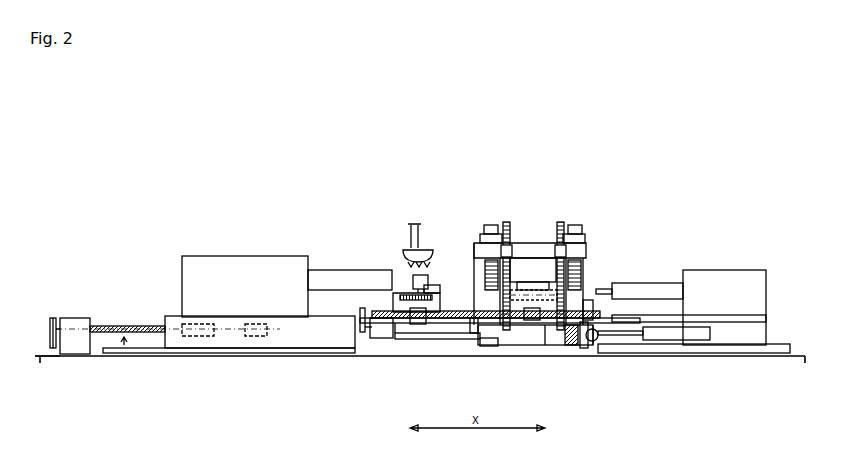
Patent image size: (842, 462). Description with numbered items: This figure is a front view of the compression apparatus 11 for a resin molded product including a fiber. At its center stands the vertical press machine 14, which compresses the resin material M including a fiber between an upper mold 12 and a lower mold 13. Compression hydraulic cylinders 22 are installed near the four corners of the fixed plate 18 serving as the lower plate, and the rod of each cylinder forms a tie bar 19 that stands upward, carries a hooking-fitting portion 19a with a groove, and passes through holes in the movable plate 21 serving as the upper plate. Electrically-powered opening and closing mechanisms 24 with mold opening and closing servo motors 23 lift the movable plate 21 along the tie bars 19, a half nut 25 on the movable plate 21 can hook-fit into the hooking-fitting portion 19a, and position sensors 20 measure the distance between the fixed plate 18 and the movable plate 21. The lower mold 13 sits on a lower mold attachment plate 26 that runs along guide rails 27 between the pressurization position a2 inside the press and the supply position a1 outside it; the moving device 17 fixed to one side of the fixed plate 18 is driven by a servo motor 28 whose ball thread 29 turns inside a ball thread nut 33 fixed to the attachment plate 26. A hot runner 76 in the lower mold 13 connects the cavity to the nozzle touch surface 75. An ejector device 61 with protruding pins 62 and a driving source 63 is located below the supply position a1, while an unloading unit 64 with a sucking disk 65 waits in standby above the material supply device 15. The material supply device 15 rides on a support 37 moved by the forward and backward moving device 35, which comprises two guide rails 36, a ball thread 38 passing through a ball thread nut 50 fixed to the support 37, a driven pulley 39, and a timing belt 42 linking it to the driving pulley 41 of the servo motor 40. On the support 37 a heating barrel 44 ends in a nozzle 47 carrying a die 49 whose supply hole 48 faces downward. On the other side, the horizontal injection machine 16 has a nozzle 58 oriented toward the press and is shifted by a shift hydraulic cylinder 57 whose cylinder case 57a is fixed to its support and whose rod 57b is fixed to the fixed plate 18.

The compression apparatus 11 is at (431, 167).
The upper mold 12 is at (480, 240).
The lower mold 13 is at (432, 293).
The vertical press machine 14 is at (488, 150).
The material supply device 15 is at (238, 250).
The horizontal injection machine 16 is at (727, 268).
The moving device 17 is at (473, 342).
The fixed plate 18 is at (595, 346).
The tie bar 19 is at (432, 260).
The hooking-fitting portion 19a is at (550, 285).
The position sensor 20 is at (477, 250).
The movable plate 21 is at (583, 298).
The compression hydraulic cylinder 22 is at (583, 348).
The mold opening and closing servo motor 23 is at (500, 346).
The electrically-powered opening and closing mechanism 24 is at (507, 240).
The half nut 25 is at (491, 260).
The lower mold attachment plate 26 is at (454, 320).
The guide rail 27 is at (441, 320).
The servo motor 28 is at (360, 356).
The ball thread 29 is at (426, 324).
The ball thread nut 33 is at (406, 332).
The forward and backward moving device 35 is at (123, 346).
The guide rail 36 is at (150, 354).
The support 37 is at (168, 316).
The ball thread 38 is at (122, 326).
The driven pulley 39 is at (62, 320).
The servo motor 40 is at (76, 357).
The driving pulley 41 is at (50, 357).
The timing belt 42 is at (51, 318).
The heating barrel 44 is at (312, 268).
The nozzle 47 is at (405, 300).
The supply hole 48 is at (395, 296).
The die 49 is at (410, 305).
The ball thread nut 50 is at (198, 336).
The shift hydraulic cylinder 57 is at (692, 354).
The cylinder case 57a is at (740, 354).
The rod 57b is at (660, 341).
The nozzle 58 is at (614, 290).
The ejector device 61 is at (390, 332).
The protruding pin 62 is at (374, 340).
The driving source 63 is at (418, 333).
The unloading unit 64 is at (407, 250).
The sucking disk 65 is at (433, 262).
The nozzle touch surface 75 is at (572, 346).
The hot runner 76 is at (588, 312).
The resin material including a fiber M is at (343, 268).
The supply position a1 is at (386, 340).
The pressurization position a2 is at (546, 346).